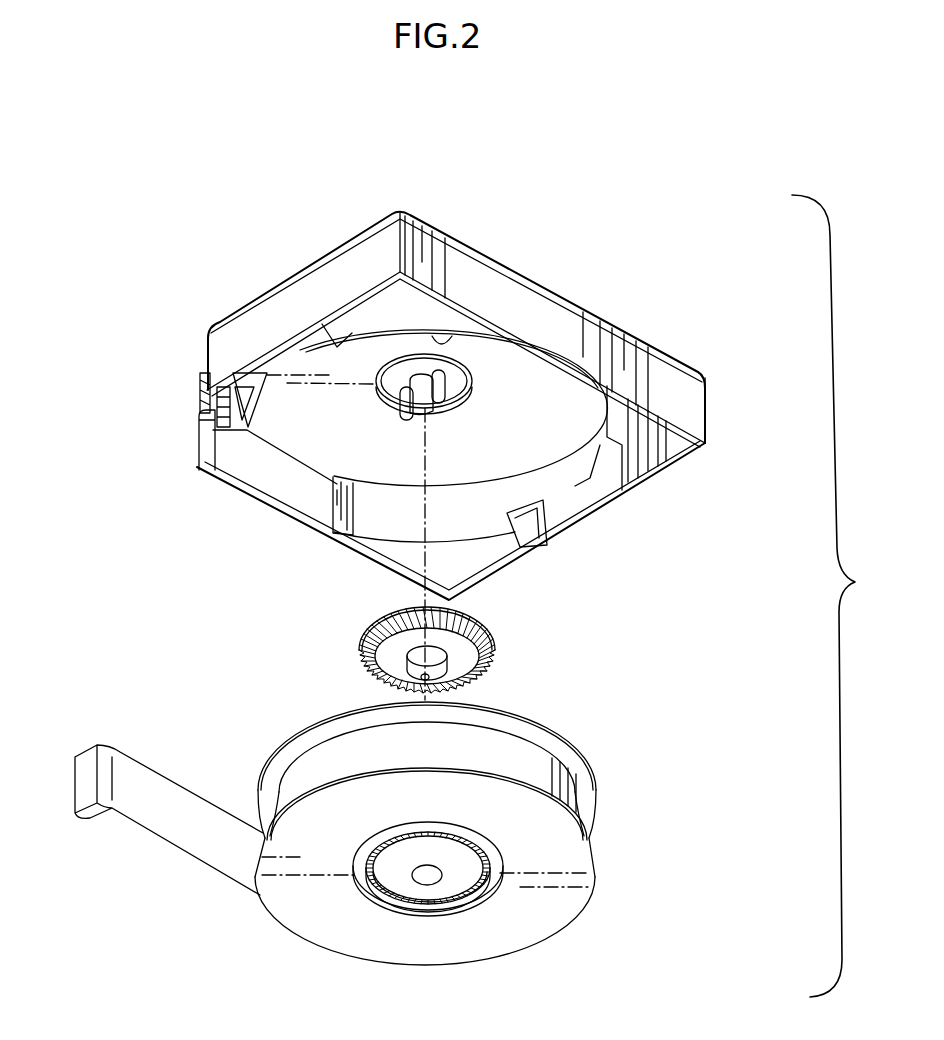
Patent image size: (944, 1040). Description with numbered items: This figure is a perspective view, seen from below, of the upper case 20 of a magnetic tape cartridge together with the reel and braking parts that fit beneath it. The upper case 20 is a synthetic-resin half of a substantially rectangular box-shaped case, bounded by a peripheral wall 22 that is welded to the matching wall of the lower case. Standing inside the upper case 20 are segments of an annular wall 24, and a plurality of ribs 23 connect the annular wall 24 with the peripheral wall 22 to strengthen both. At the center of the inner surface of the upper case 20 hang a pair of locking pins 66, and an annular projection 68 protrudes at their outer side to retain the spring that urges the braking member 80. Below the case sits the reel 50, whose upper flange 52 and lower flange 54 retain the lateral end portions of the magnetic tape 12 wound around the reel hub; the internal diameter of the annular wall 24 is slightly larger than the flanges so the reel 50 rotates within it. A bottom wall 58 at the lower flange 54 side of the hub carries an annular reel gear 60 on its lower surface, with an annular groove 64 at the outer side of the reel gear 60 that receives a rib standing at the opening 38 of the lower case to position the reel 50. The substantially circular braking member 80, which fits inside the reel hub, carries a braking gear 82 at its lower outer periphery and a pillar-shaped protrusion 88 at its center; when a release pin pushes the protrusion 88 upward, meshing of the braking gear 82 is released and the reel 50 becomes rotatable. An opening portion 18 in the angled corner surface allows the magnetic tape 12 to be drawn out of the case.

The magnetic tape 12 is at (220, 845).
The opening portion 18 is at (204, 410).
The upper case 20 is at (700, 362).
The peripheral wall 22 is at (690, 415).
The ribs 23 is at (610, 470).
The annular wall 24 is at (437, 338).
The opening 38 is at (487, 890).
The reel 50 is at (620, 804).
The upper flange 52 is at (560, 742).
The lower flange 54 is at (565, 905).
The bottom wall 58 is at (366, 882).
The reel gear 60 is at (494, 860).
The annular groove 64 is at (358, 860).
The locking pins 66 is at (426, 412).
The annular projection 68 is at (470, 382).
The braking member 80 is at (514, 653).
The braking gear 82 is at (490, 662).
The protrusion 88 is at (408, 668).